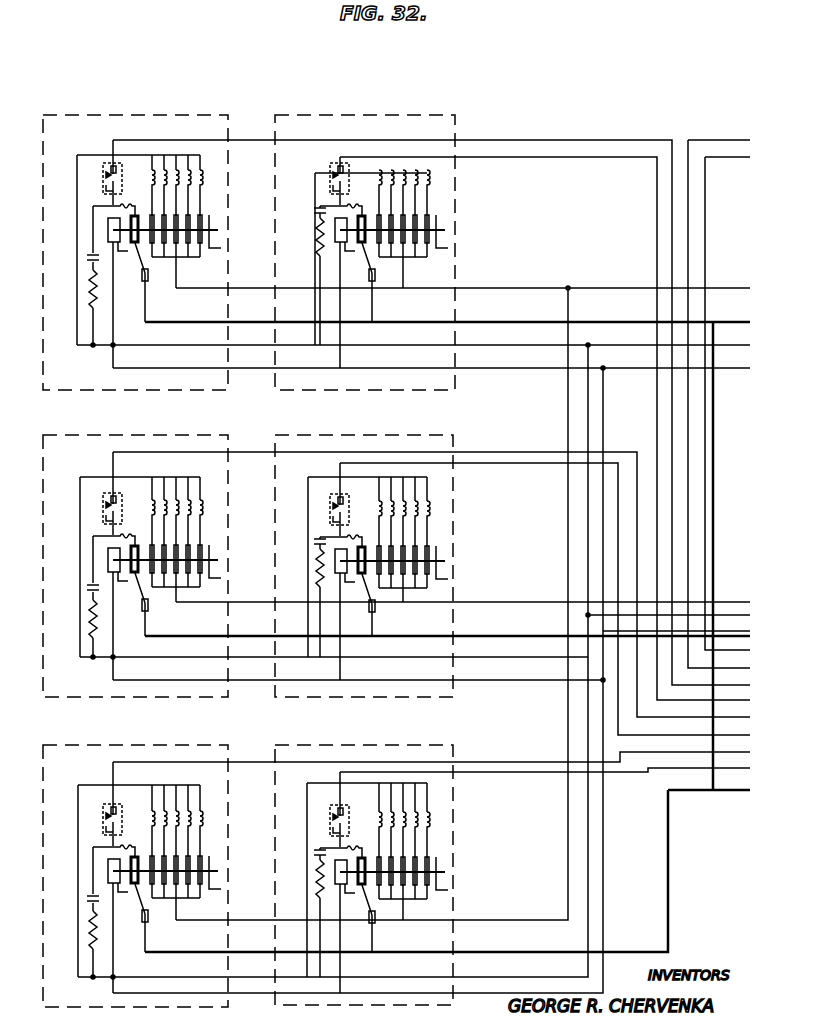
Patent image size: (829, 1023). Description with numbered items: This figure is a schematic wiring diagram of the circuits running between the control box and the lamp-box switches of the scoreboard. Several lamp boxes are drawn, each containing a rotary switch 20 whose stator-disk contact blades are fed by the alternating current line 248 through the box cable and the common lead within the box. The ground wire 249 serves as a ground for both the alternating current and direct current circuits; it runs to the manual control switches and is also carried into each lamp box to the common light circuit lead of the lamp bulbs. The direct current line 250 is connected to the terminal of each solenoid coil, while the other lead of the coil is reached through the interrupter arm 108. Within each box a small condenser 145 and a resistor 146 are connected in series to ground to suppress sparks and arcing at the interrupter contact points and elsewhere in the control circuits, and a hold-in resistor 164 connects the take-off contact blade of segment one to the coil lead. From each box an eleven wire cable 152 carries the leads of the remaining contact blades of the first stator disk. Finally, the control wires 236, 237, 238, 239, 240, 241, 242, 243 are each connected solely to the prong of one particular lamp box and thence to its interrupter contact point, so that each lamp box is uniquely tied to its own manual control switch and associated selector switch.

The rotary switch 20 is at (308, 207).
The interrupter arm 108 is at (103, 184).
The condenser 145 is at (87, 266).
The resistor 146 is at (88, 296).
The eleven wire cable 152 is at (448, 626).
The hold-in resistor 164 is at (128, 206).
The control wire 236 is at (743, 408).
The control wire 237 is at (735, 396).
The control wire 238 is at (447, 408).
The control wire 239 is at (561, 434).
The control wire 240 is at (447, 578).
The control wire 241 is at (561, 604).
The control wire 242 is at (444, 750).
The control wire 243 is at (557, 783).
The alternating current line 248 is at (470, 593).
The ground wire 249 is at (428, 650).
The direct current line 250 is at (448, 689).